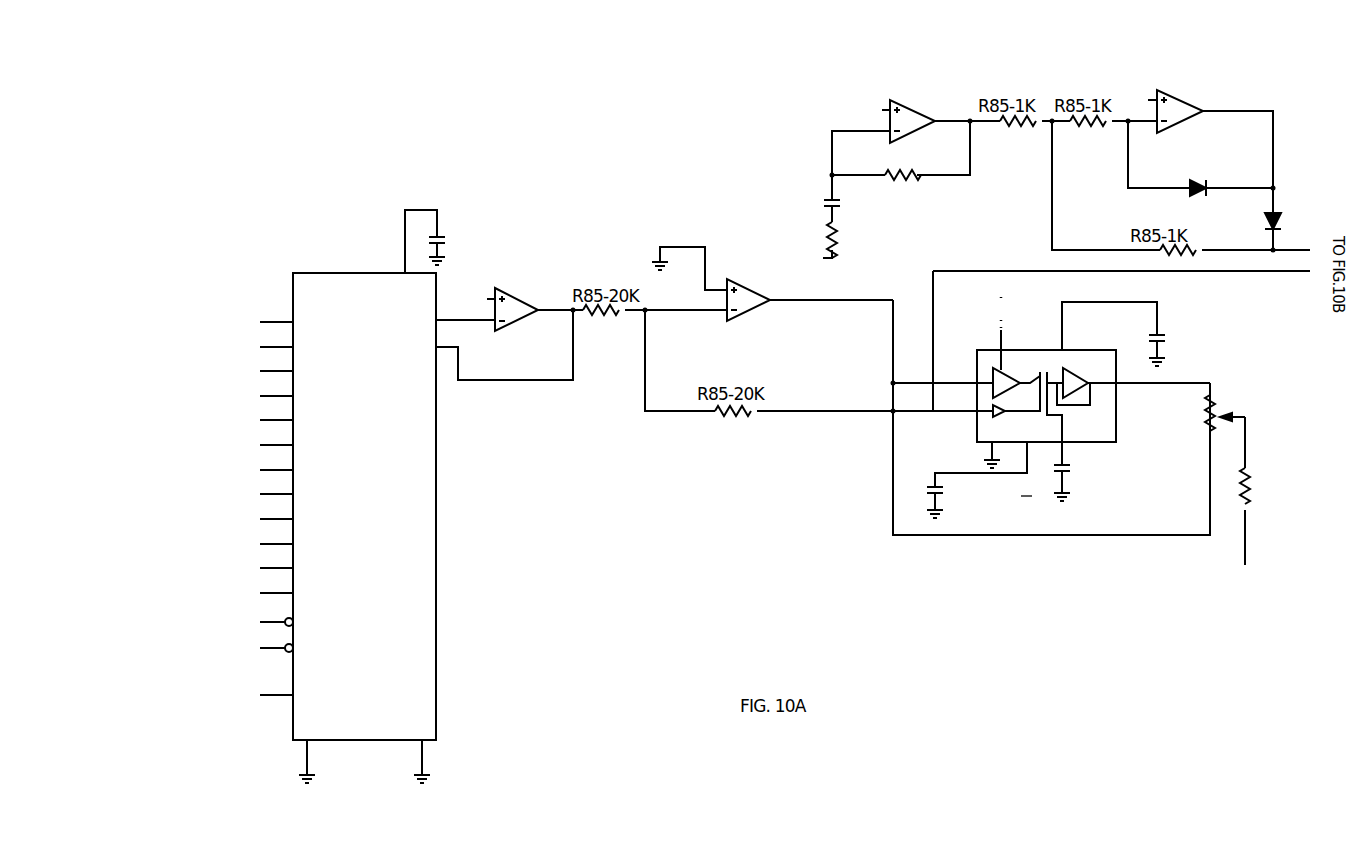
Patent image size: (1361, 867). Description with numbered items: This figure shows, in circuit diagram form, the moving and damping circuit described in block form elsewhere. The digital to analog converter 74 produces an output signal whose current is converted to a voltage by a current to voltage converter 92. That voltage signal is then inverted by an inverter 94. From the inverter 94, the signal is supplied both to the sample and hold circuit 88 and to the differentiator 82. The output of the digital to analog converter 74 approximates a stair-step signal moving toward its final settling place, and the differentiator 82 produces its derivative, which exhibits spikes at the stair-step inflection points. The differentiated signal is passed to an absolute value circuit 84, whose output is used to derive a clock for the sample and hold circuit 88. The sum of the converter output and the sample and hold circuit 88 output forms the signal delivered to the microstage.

The digital to analog converter 74 is at (385, 497).
The differentiator 82 is at (958, 142).
The absolute value circuit 84 is at (1235, 144).
The sample and hold circuit 88 is at (1170, 494).
The current to voltage converter 92 is at (518, 330).
The inverter 94 is at (730, 343).